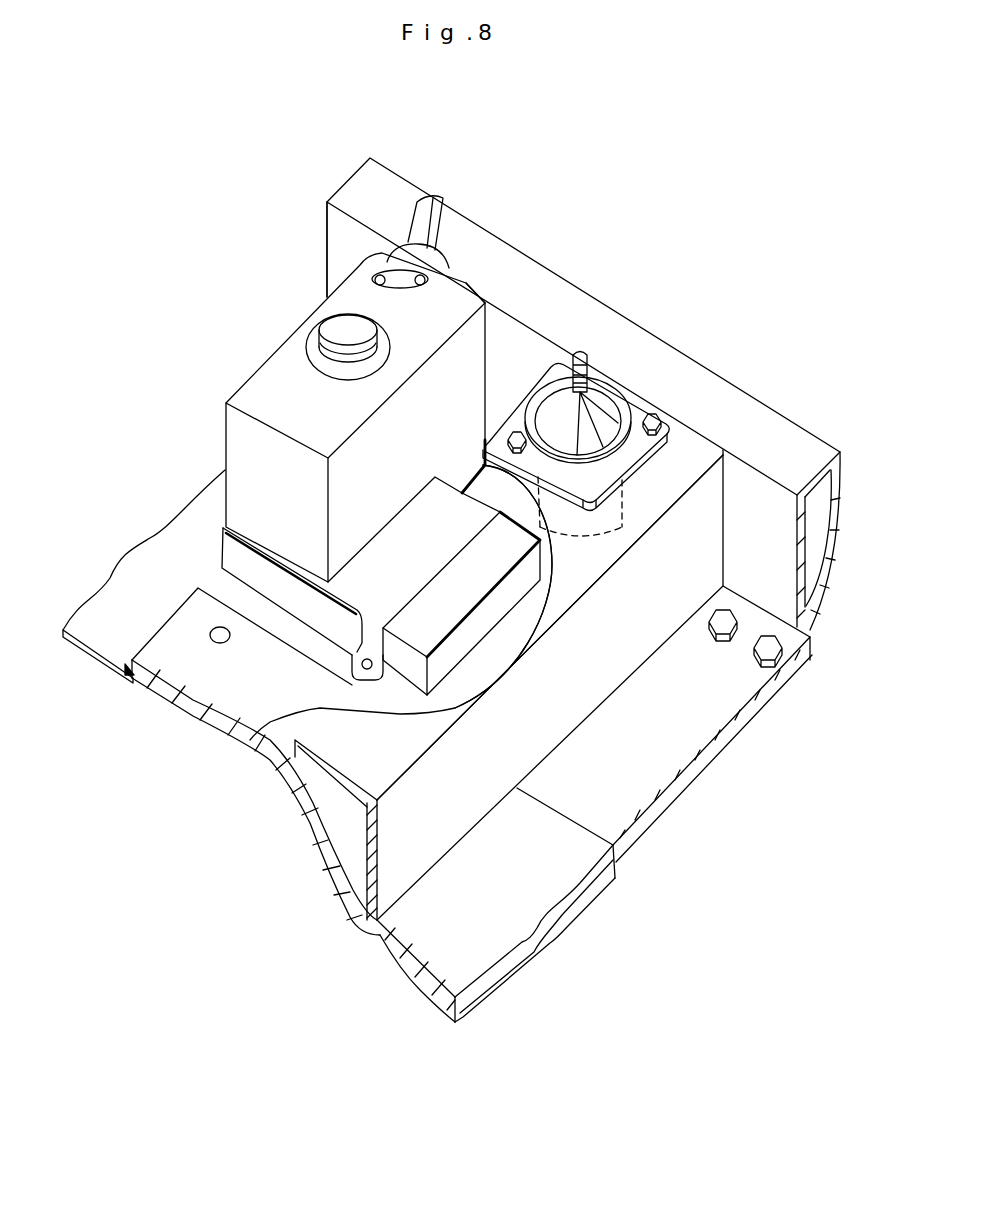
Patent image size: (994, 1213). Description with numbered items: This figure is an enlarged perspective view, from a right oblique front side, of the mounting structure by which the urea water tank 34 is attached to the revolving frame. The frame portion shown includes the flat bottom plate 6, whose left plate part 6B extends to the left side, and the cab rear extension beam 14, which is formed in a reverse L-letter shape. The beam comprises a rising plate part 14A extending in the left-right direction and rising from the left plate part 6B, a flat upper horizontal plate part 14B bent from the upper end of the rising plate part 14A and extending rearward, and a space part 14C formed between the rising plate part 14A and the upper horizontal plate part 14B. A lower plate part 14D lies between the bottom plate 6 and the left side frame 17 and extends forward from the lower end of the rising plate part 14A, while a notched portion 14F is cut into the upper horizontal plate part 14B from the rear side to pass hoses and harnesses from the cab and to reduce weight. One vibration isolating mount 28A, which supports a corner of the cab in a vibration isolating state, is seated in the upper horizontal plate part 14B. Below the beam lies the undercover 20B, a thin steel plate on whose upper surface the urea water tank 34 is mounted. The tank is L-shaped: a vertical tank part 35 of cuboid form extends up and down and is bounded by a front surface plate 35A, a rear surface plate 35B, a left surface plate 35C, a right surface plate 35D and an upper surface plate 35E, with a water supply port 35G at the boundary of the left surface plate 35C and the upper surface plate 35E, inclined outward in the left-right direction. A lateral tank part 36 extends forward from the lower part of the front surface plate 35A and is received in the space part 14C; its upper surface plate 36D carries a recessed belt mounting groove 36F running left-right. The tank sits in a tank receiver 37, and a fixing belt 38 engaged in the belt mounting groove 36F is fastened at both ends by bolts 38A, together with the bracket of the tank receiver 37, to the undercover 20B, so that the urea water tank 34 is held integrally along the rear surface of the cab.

The bottom plate 6 is at (173, 663).
The left plate part 6B is at (233, 681).
The cab rear extension beam 14 is at (472, 738).
The rising plate part 14A is at (407, 850).
The upper horizontal plate part 14B is at (327, 742).
The space part 14C is at (525, 613).
The lower plate part 14D is at (672, 735).
The notched portion 14F is at (255, 738).
The left side frame 17 is at (665, 384).
The undercover 20B is at (153, 587).
The vibration isolating mount 28A is at (600, 407).
The urea water tank 34 is at (297, 265).
The vertical tank part 35 is at (355, 337).
The front surface plate 35A is at (487, 355).
The rear surface plate 35B is at (280, 350).
The left surface plate 35C is at (550, 358).
The right surface plate 35D is at (258, 488).
The upper surface plate 35E is at (437, 316).
The water supply port 35G is at (428, 203).
The lateral tank part 36 is at (510, 595).
The upper surface plate 36D is at (430, 618).
The belt mounting groove 36F is at (553, 560).
The tank receiver 37 is at (232, 548).
The fixing belt 38 is at (370, 650).
The bolts 38A is at (382, 670).